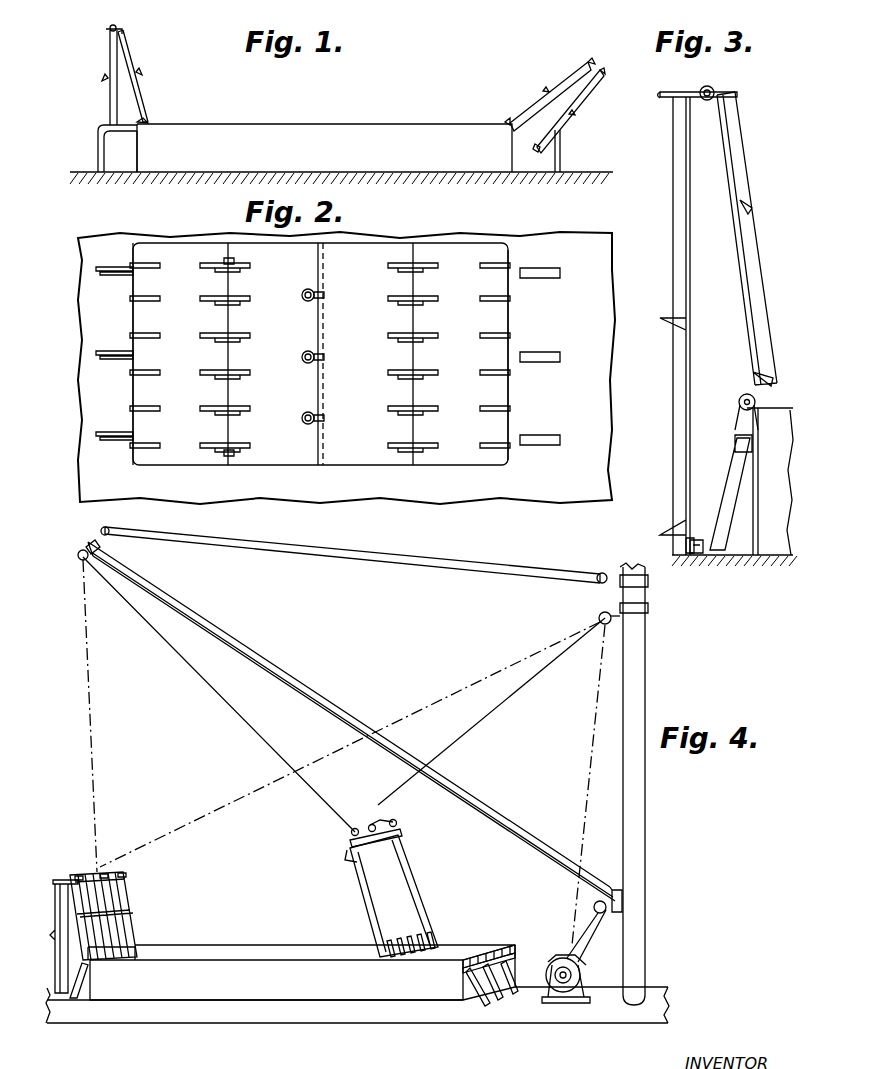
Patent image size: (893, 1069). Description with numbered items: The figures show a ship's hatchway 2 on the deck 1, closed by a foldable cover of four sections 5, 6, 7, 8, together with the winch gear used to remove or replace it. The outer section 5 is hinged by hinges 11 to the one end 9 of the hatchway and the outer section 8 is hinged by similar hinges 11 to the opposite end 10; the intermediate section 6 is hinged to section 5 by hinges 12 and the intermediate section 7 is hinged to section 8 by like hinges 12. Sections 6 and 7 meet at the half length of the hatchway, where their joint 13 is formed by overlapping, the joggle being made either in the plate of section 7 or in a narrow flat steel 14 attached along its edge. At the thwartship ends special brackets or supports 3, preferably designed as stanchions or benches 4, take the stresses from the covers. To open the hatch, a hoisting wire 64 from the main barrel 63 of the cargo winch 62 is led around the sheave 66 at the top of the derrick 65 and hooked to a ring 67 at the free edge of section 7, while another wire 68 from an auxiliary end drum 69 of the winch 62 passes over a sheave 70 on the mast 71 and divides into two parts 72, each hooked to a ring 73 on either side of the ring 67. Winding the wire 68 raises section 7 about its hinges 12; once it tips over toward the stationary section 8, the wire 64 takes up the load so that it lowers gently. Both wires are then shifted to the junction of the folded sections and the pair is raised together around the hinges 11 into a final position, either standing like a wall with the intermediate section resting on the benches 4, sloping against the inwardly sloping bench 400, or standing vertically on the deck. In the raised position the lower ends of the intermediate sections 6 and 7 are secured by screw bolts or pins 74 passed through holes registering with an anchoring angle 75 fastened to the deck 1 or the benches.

In FIG. 1, the ship's deck 1 is at (170, 174).
In FIG. 2, the ship's deck 1 is at (585, 462).
In FIG. 3, the ship's deck 1 is at (746, 557).
In FIG. 4, the ship's deck 1 is at (284, 1013).
In FIG. 1, the hatchway 2 is at (298, 123).
In FIG. 2, the hatchway 2 is at (350, 466).
In FIG. 3, the hatchway 2 is at (783, 535).
In FIG. 4, the hatchway 2 is at (241, 944).
In FIG. 3, the brackets or supports 3 is at (738, 485).
In FIG. 4, the brackets or supports 3 is at (90, 985).
In FIG. 1, the stanchions or benches 4 is at (98, 147).
In FIG. 2, the stanchions or benches 4 is at (114, 359).
In FIG. 1, the cover section 5 is at (130, 58).
In FIG. 2, the cover section 5 is at (190, 450).
In FIG. 3, the cover section 5 is at (733, 214).
In FIG. 4, the cover section 5 is at (120, 898).
In FIG. 1, the cover section 6 is at (110, 62).
In FIG. 2, the cover section 6 is at (283, 453).
In FIG. 3, the cover section 6 is at (692, 358).
In FIG. 4, the cover section 6 is at (72, 917).
In FIG. 1, the cover section 7 is at (575, 104).
In FIG. 2, the cover section 7 is at (358, 443).
In FIG. 4, the cover section 7 is at (395, 881).
In FIG. 1, the cover section 8 is at (540, 100).
In FIG. 2, the cover section 8 is at (455, 450).
In FIG. 4, the cover section 8 is at (466, 945).
In FIG. 1, the end of hatchway 9 is at (135, 146).
In FIG. 2, the end of hatchway 9 is at (131, 318).
In FIG. 3, the end of hatchway 9 is at (760, 470).
In FIG. 4, the end of hatchway 9 is at (140, 950).
In FIG. 1, the end of hatchway 10 is at (514, 152).
In FIG. 2, the end of hatchway 10 is at (510, 323).
In FIG. 4, the end of hatchway 10 is at (500, 1005).
In FIG. 1, the hinges 11 is at (144, 118).
In FIG. 2, the hinges 11 is at (130, 408).
In FIG. 3, the hinges 11 is at (739, 402).
In FIG. 4, the hinges 11 is at (501, 945).
In FIG. 2, the hinges 12 is at (228, 455).
In FIG. 3, the hinges 12 is at (716, 90).
In FIG. 4, the hinges 12 is at (75, 877).
In FIG. 2, the joint 13 is at (316, 453).
In FIG. 4, the flat steel 14 is at (402, 838).
In FIG. 4, the cargo winch 62 is at (571, 990).
In FIG. 4, the main barrel 63 is at (576, 958).
In FIG. 4, the hoisting wire 64 is at (205, 675).
In FIG. 4, the derrick 65 is at (327, 697).
In FIG. 4, the sheave 66 is at (89, 536).
In FIG. 2, the ring 67 is at (302, 355).
In FIG. 4, the ring 67 is at (373, 824).
In FIG. 4, the wire 68 is at (488, 718).
In FIG. 4, the auxiliary end drum 69 is at (562, 980).
In FIG. 4, the sheave 70 is at (603, 625).
In FIG. 4, the mast 71 is at (640, 850).
In FIG. 4, the wire parts 72 is at (395, 807).
In FIG. 2, the rings 73 is at (303, 291).
In FIG. 4, the rings 73 is at (351, 832).
In FIG. 3, the screw bolts or pins 74 is at (680, 540).
In FIG. 3, the anchoring angle 75 is at (703, 540).
In FIG. 1, the inwardly sloping bench 400 is at (546, 150).
In FIG. 2, the inwardly sloping bench 400 is at (558, 355).